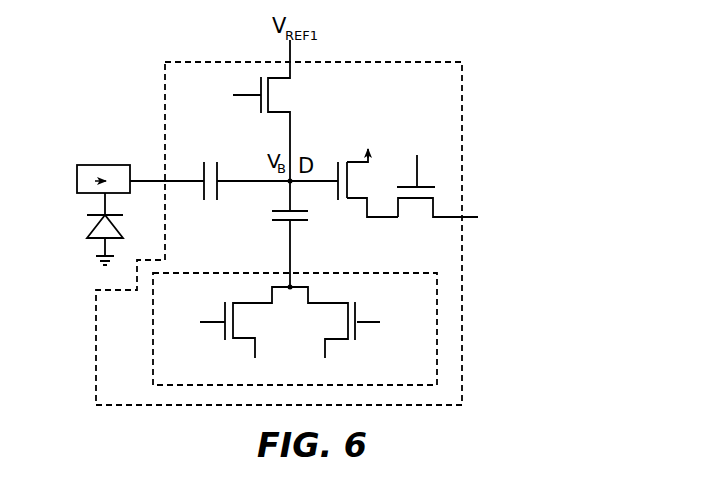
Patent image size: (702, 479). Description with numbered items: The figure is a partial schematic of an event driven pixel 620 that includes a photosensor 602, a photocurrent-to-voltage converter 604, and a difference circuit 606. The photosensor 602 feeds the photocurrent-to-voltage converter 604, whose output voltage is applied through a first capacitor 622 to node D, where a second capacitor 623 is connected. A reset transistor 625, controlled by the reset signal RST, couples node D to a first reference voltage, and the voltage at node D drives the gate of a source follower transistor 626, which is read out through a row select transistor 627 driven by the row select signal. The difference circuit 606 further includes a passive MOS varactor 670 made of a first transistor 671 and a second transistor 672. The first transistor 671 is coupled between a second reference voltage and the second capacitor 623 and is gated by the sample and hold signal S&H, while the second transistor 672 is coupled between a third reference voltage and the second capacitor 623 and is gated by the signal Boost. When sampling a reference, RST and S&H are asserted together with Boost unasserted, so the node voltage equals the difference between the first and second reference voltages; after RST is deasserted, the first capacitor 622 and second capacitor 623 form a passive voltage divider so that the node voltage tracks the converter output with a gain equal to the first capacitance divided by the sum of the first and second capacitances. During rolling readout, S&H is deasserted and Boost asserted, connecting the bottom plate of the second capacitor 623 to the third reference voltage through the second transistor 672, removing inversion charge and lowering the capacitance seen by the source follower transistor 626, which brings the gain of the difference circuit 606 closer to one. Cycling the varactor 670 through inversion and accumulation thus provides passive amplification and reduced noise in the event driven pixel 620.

The photosensor 602 is at (87, 236).
The photocurrent-to-voltage converter 604 is at (88, 164).
The difference circuit 606 is at (165, 75).
The event driven pixel 620 is at (494, 49).
The first capacitor 622 is at (225, 160).
The second capacitor 623 is at (263, 219).
The reset transistor 625 is at (295, 88).
The source follower transistor 626 is at (347, 147).
The row select transistor 627 is at (413, 227).
The passive MOS varactor 670 is at (153, 363).
The first transistor 671 is at (218, 302).
The second transistor 672 is at (367, 308).